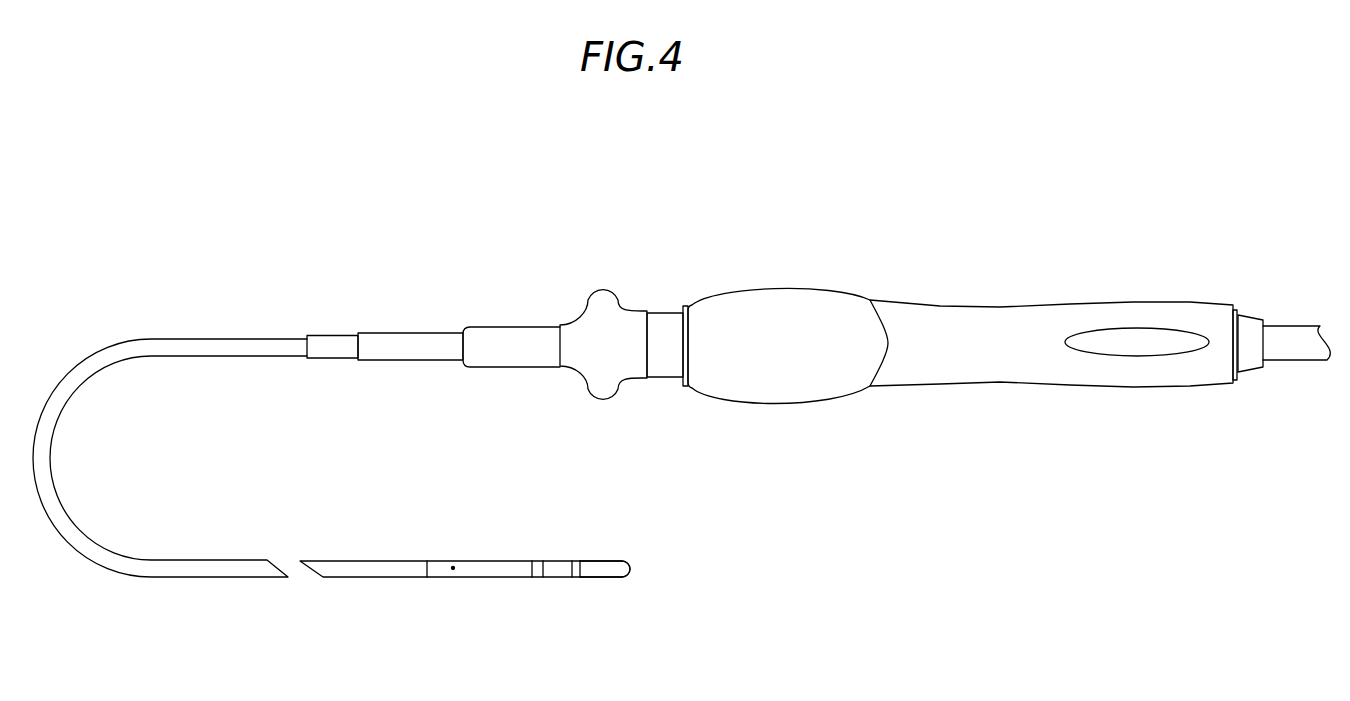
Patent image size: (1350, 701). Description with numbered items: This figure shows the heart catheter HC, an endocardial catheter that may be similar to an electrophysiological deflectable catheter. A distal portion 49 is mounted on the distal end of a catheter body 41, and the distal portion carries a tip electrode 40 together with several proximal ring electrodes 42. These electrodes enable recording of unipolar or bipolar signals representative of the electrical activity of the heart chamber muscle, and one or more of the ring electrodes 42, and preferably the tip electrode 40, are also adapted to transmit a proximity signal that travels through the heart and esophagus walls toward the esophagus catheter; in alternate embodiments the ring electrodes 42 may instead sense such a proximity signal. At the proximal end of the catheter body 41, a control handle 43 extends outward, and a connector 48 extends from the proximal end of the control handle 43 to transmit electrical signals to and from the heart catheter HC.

The tip electrode 40 is at (632, 567).
The catheter body 41 is at (223, 343).
The proximal ring electrodes 42 is at (575, 565).
The control handle 43 is at (997, 368).
The connector 48 is at (1283, 330).
The distal portion 49 is at (485, 568).
The heart catheter HC is at (696, 213).